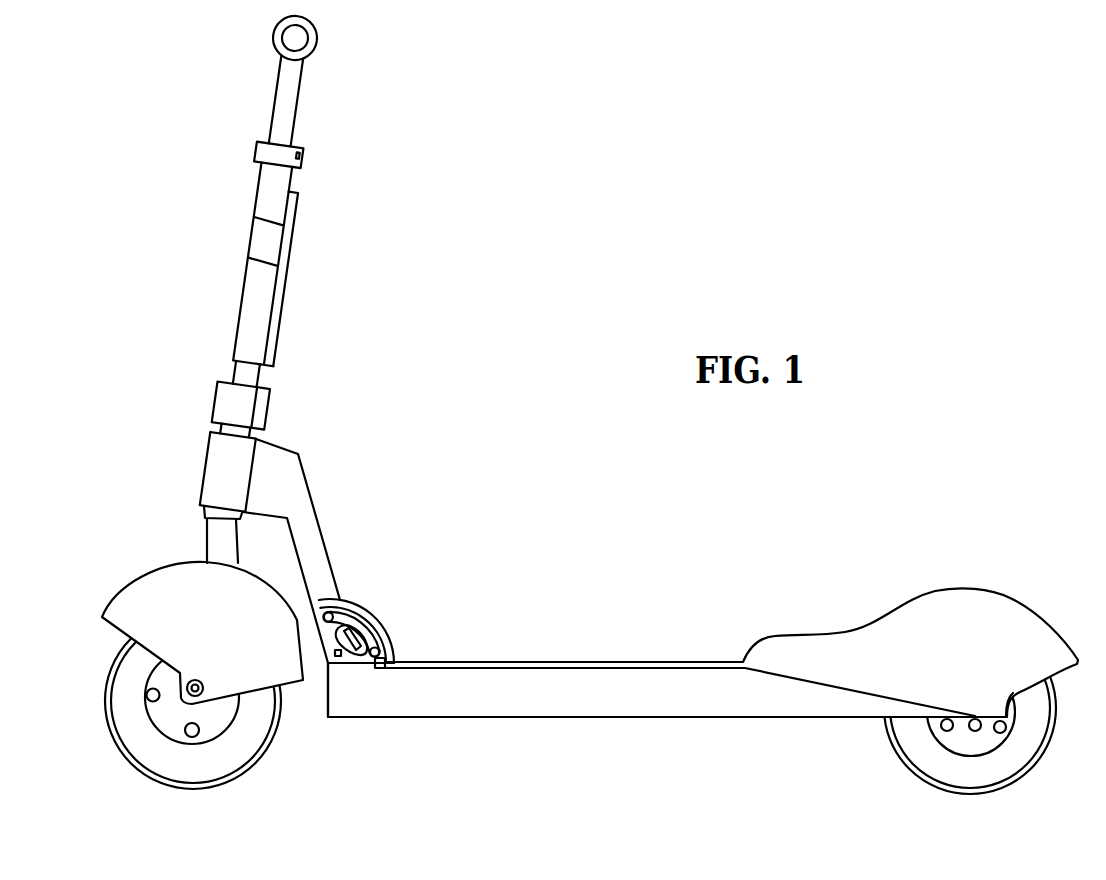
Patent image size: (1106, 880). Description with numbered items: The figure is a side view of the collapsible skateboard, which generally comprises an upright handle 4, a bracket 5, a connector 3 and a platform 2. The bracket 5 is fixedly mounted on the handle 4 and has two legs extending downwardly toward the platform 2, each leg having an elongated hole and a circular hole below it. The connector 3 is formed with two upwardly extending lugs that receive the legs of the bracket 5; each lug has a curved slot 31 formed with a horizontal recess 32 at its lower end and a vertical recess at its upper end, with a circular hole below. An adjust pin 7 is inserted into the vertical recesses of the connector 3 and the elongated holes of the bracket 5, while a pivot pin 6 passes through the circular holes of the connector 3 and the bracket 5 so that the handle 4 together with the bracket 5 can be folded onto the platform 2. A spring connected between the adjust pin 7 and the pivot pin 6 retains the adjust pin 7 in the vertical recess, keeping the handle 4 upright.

The platform 2 is at (721, 711).
The connector 3 is at (393, 638).
The curved slot 31 is at (360, 618).
The horizontal recess 32 is at (387, 668).
The upright handle 4 is at (238, 375).
The bracket 5 is at (320, 527).
The pivot pin 6 is at (328, 666).
The adjust pin 7 is at (302, 623).